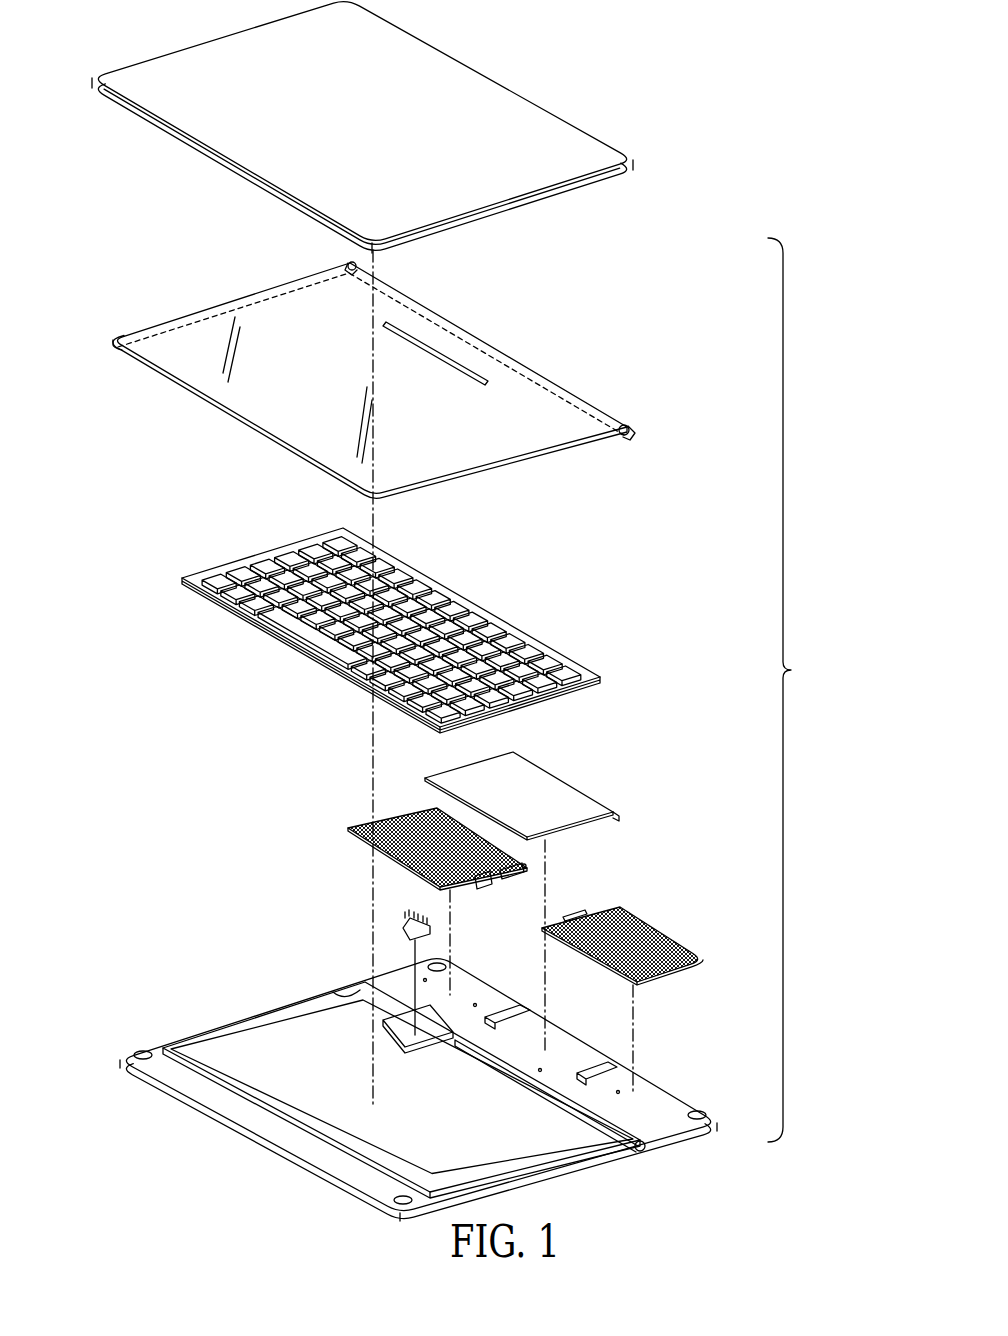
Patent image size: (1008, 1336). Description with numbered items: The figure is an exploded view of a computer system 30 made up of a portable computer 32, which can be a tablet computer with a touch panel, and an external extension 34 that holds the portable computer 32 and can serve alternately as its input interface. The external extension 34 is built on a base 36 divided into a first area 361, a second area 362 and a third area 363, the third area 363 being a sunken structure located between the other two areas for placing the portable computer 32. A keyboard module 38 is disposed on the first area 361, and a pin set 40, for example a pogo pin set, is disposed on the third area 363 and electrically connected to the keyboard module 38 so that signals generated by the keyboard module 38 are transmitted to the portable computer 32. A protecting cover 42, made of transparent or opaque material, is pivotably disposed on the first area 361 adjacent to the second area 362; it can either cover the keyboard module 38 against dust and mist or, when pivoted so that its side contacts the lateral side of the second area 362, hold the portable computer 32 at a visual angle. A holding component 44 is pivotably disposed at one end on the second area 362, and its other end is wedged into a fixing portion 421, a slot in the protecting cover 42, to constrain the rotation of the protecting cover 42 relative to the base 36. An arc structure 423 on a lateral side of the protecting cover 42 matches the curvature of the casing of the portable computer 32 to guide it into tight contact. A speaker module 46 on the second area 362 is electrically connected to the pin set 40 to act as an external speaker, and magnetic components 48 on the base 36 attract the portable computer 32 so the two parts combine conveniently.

The computer system 30 is at (777, 78).
The portable computer 32 is at (513, 95).
The external extension 34 is at (448, 739).
The base 36 is at (438, 1073).
The first area 361 is at (523, 1155).
The second area 362 is at (647, 1122).
The third area 363 is at (617, 1147).
The keyboard module 38 is at (490, 617).
The pin set 40 is at (403, 918).
The protecting cover 42 is at (363, 380).
The fixing portion 421 is at (435, 350).
The arc structure 423 is at (113, 345).
The holding component 44 is at (563, 782).
The speaker module 46 is at (663, 928).
The magnetic component 48 is at (441, 963).